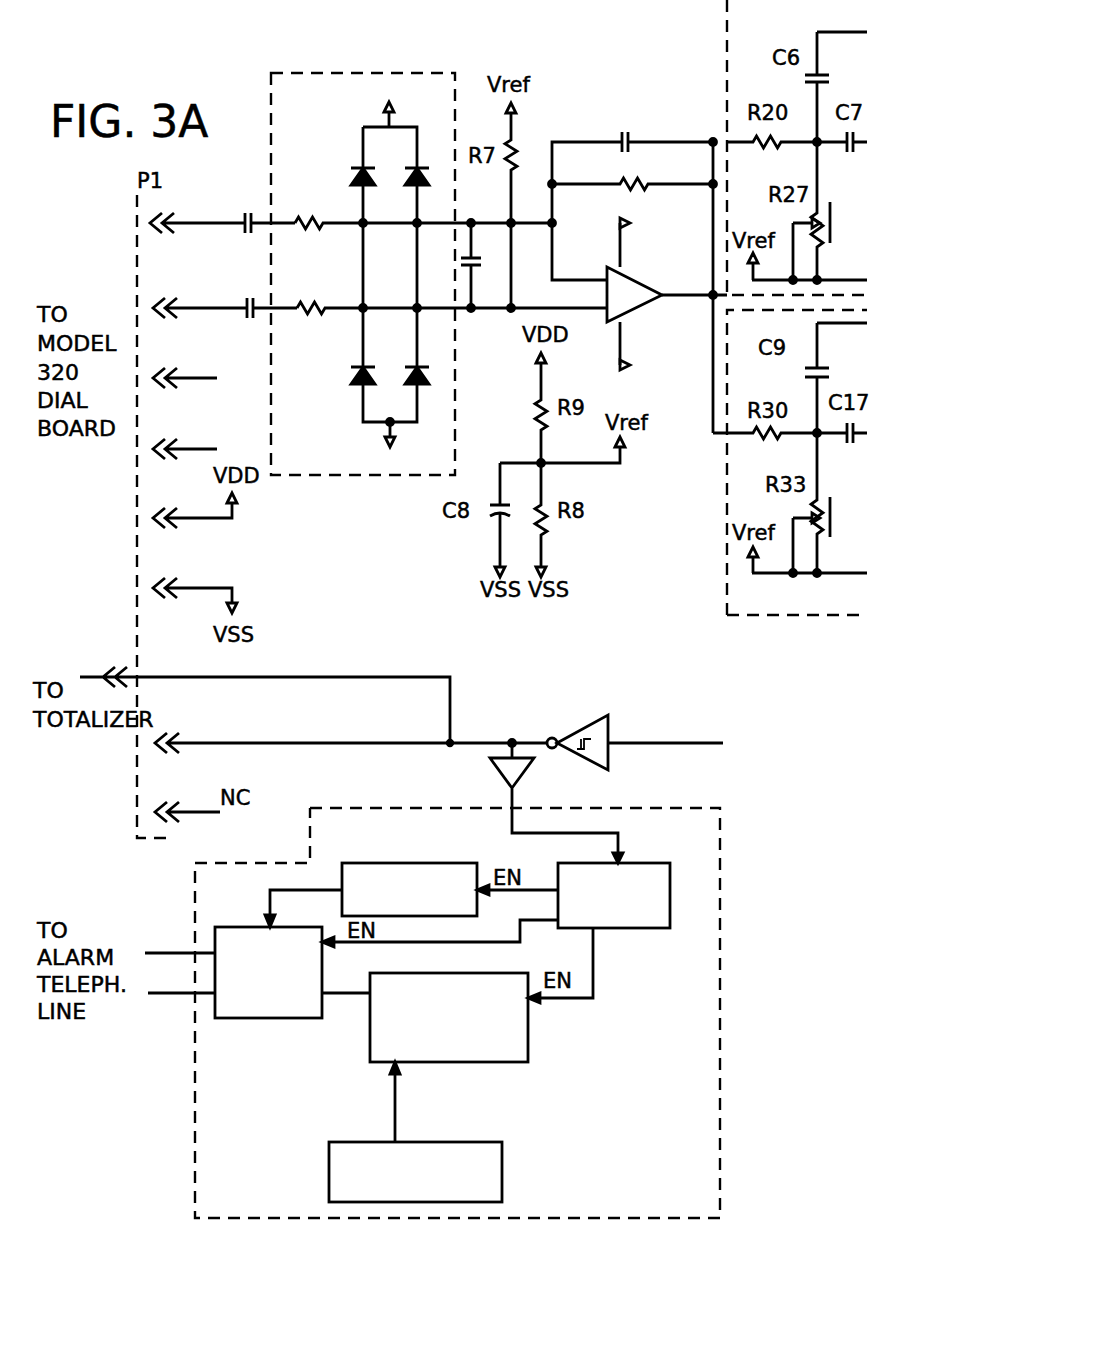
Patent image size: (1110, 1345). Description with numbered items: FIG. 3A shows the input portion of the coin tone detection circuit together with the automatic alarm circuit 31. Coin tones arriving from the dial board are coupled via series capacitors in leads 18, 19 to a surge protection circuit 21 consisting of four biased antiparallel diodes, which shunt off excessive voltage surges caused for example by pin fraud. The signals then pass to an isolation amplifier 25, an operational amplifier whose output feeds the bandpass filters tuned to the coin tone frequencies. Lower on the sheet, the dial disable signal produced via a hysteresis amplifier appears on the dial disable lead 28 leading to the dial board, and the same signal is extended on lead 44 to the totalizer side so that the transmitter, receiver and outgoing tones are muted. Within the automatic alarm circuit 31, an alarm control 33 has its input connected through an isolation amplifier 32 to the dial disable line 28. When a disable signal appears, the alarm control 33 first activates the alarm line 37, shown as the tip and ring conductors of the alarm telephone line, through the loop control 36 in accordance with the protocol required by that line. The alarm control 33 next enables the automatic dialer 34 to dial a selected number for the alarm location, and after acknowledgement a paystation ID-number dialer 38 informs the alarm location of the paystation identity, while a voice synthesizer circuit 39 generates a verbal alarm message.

The lead 18 is at (182, 222).
The lead 19 is at (182, 307).
The surge protection circuit 21 is at (312, 90).
The isolation amplifier 25 is at (642, 300).
The dial disable lead 28 is at (439, 731).
The automatic alarm circuit 31 is at (205, 1146).
The isolation amplifier 32 is at (509, 783).
The alarm control 33 is at (676, 863).
The automatic dialer 34 is at (402, 863).
The loop control 36 is at (276, 1018).
The alarm line 37 is at (193, 953).
The paystation ID-number dialer 38 is at (466, 1062).
The voice synthesizer circuit 39 is at (503, 1172).
The lead 44 is at (160, 678).